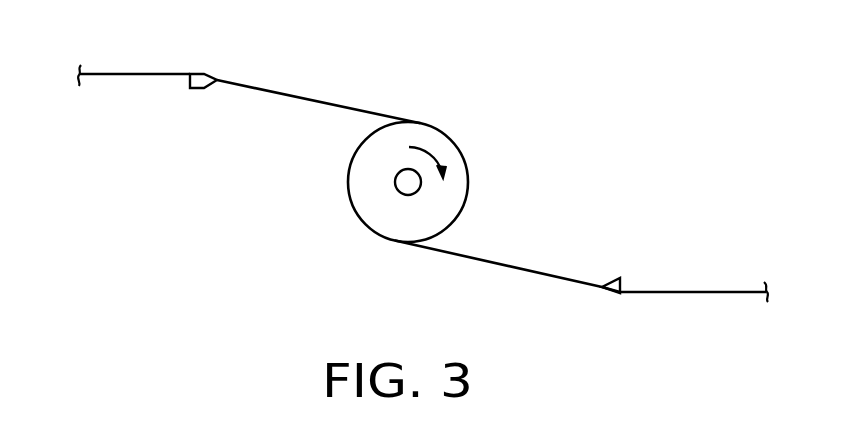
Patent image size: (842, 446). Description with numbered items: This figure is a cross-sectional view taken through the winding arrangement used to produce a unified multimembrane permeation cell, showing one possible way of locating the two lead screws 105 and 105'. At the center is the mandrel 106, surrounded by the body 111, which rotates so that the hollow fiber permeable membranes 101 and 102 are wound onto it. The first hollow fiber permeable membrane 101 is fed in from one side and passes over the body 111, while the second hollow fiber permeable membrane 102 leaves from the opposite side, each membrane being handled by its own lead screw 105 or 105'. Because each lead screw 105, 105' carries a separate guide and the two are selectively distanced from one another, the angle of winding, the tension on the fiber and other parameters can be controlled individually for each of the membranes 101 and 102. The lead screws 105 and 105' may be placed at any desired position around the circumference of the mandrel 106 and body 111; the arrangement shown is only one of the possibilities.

The hollow fiber permeable membrane 101 is at (313, 100).
The hollow fiber permeable membrane 102 is at (677, 292).
The lead screw 105 is at (198, 103).
The lead screw 105' is at (610, 309).
The mandrel 106 is at (398, 186).
The body 111 is at (453, 160).